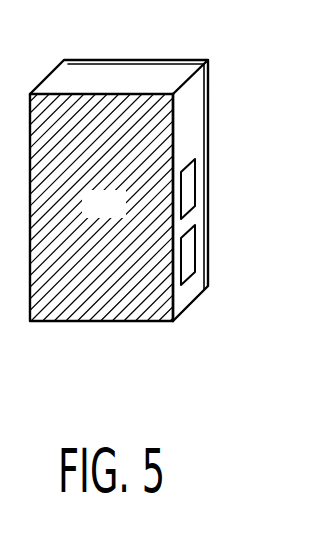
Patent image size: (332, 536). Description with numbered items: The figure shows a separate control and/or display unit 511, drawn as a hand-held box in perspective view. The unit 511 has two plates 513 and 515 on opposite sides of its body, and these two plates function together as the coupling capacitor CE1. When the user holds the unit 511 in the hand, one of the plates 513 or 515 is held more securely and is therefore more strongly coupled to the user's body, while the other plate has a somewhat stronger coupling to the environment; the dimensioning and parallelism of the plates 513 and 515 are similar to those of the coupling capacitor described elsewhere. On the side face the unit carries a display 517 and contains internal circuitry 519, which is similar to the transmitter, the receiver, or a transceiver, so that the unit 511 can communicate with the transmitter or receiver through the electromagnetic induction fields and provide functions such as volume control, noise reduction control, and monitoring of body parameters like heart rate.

The control and/or display unit 511 is at (158, 322).
The plate 513 is at (175, 133).
The plate 515 is at (185, 60).
The display 517 is at (189, 185).
The internal circuitry 519 is at (187, 255).